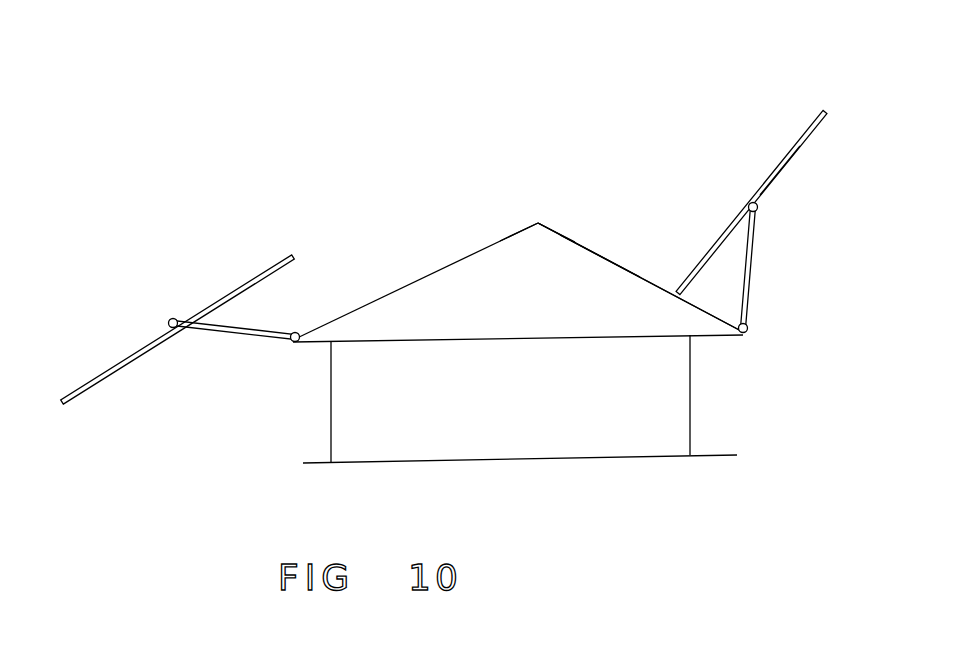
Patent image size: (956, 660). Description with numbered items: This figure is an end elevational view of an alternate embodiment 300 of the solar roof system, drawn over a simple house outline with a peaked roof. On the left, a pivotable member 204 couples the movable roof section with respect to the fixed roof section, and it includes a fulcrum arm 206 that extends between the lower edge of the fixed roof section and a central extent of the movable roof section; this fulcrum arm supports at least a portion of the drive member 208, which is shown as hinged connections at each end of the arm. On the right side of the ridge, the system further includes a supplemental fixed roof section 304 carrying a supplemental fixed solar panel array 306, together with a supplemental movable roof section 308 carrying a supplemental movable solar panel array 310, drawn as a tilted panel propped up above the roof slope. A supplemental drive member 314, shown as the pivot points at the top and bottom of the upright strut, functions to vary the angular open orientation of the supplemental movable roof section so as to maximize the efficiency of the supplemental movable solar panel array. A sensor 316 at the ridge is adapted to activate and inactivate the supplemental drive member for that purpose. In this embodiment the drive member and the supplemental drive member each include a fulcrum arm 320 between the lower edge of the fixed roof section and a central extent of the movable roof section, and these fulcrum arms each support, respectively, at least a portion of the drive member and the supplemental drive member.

The embodiment 300 is at (392, 152).
The pivotable member 204 is at (227, 327).
The fulcrum arm 206 is at (233, 331).
The drive member 208 is at (173, 320).
The supplemental fixed roof section 304 is at (578, 246).
The supplemental fixed solar panel array 306 is at (603, 260).
The supplemental movable roof section 308 is at (777, 177).
The supplemental movable solar panel array 310 is at (780, 157).
The supplemental drive member 314 is at (758, 210).
The sensor 316 is at (538, 223).
The fulcrum arm 320 is at (750, 268).